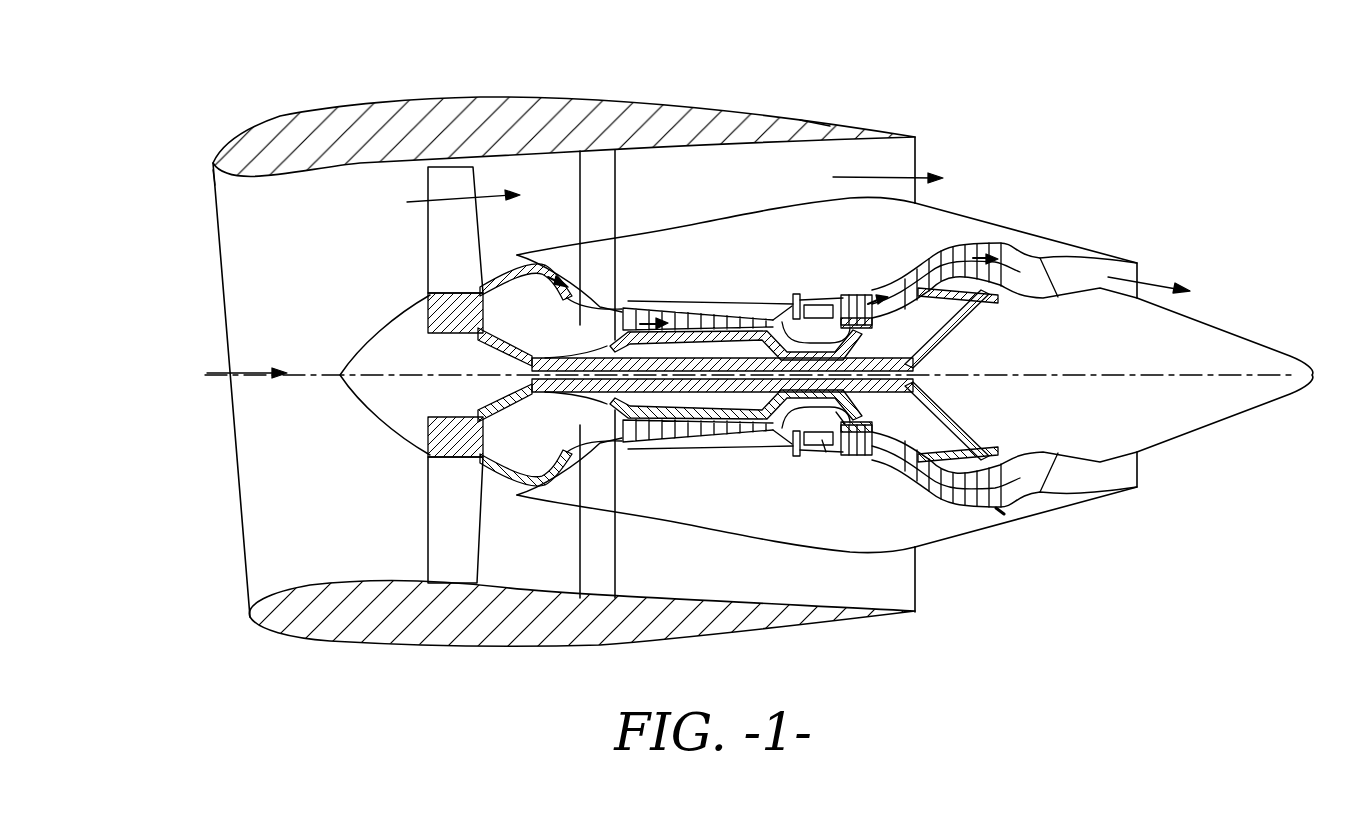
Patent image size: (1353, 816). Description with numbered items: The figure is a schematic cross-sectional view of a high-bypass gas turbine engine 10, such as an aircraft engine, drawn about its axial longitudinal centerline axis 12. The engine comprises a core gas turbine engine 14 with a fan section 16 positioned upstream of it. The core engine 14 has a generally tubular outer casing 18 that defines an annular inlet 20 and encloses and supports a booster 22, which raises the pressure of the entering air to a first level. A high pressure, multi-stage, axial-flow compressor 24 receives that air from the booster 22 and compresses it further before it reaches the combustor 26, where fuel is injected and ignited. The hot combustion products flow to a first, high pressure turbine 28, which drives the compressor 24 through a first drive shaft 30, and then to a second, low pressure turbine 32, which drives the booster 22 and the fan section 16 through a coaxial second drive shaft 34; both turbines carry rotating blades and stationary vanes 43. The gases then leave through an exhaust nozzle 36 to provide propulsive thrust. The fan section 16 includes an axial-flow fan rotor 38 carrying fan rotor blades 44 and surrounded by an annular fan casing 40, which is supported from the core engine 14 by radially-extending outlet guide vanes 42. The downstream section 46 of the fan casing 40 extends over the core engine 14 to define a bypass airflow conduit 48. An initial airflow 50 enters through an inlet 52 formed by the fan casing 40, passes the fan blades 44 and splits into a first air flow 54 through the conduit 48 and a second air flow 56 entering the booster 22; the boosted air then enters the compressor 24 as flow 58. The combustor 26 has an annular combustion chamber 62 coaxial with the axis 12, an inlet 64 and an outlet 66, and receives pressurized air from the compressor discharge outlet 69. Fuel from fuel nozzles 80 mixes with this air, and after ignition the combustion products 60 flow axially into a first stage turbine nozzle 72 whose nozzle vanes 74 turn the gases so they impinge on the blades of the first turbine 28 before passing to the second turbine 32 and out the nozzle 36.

The gas turbine engine 10 is at (1071, 165).
The longitudinal centerline axis 12 is at (1064, 373).
The core gas turbine engine 14 is at (810, 254).
The fan section 16 is at (497, 92).
The outer casing 18 is at (780, 540).
The annular inlet 20 is at (520, 481).
The booster 22 is at (582, 447).
The high pressure compressor 24 is at (643, 432).
The combustor 26 is at (808, 453).
The first (high pressure) turbine 28 is at (876, 442).
The first (high pressure) drive shaft 30 is at (853, 332).
The second (low pressure) turbine 32 is at (997, 512).
The second (low pressure) drive shaft 34 is at (578, 357).
The exhaust nozzle 36 is at (1142, 270).
The fan rotor 38 is at (482, 335).
The fan casing 40 is at (482, 648).
The outlet guide vanes 42 is at (618, 172).
The stationary vanes 43 is at (1033, 452).
The fan rotor blades 44 is at (422, 532).
The downstream section of the fan casing 46 is at (818, 125).
The bypass airflow conduit 48 is at (714, 192).
The initial airflow 50 is at (243, 371).
The inlet 52 is at (247, 580).
The first air flow 54 is at (436, 200).
The second air flow 56 is at (503, 268).
The compressed airflow entering the high pressure compressor 58 is at (633, 309).
The combustion products 60 is at (853, 290).
The annular combustion chamber 62 is at (830, 452).
The combustor inlet 64 is at (770, 297).
The combustor outlet 66 is at (818, 300).
The high pressure compressor discharge outlet 69 is at (777, 443).
The first stage turbine nozzle 72 is at (833, 458).
The nozzle vanes 74 is at (836, 410).
The fuel nozzles 80 is at (793, 293).